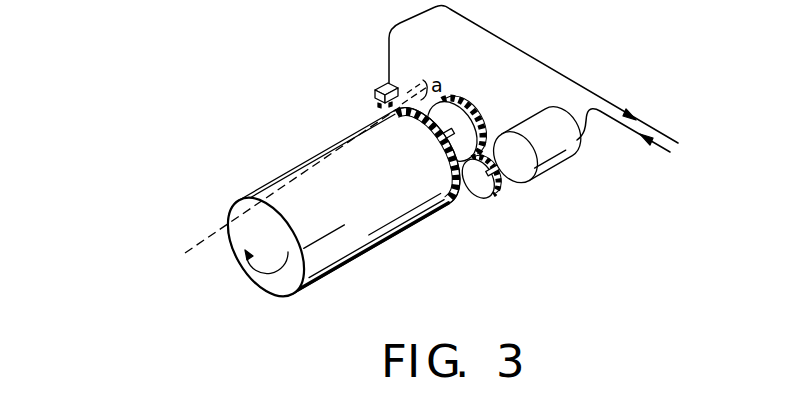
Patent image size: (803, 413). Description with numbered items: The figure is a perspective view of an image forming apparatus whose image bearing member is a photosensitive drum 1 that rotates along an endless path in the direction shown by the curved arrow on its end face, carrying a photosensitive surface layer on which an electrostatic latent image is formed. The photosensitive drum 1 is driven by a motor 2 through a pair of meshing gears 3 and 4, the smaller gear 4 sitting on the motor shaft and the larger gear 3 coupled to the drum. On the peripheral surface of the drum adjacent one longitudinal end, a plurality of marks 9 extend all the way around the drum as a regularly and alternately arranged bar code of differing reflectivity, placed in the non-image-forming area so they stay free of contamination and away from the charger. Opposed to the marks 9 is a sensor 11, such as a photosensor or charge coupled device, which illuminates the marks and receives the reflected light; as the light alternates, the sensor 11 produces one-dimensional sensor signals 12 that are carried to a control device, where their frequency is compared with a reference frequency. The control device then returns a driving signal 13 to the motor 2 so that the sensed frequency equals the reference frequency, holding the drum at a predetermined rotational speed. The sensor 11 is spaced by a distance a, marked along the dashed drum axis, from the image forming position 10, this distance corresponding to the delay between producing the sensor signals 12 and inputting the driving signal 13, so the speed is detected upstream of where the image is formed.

The photosensitive drum 1 is at (368, 241).
The motor 2 is at (562, 163).
The gear 3 is at (467, 108).
The gear 4 is at (489, 199).
The marks 9 is at (457, 202).
The image forming position 10 is at (201, 243).
The sensor 11 is at (378, 85).
The sensor signals 12 is at (576, 80).
The driving signal 13 is at (655, 147).